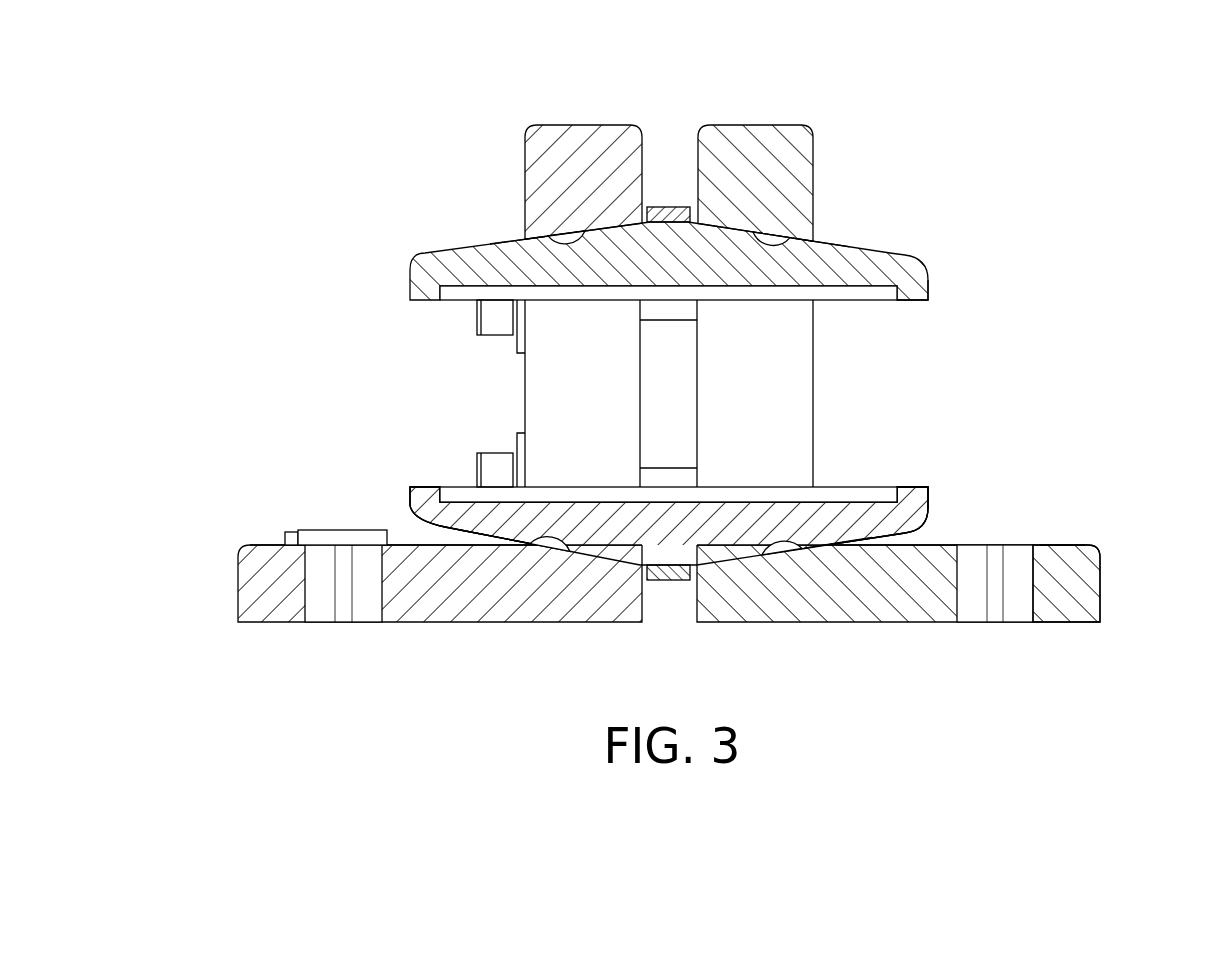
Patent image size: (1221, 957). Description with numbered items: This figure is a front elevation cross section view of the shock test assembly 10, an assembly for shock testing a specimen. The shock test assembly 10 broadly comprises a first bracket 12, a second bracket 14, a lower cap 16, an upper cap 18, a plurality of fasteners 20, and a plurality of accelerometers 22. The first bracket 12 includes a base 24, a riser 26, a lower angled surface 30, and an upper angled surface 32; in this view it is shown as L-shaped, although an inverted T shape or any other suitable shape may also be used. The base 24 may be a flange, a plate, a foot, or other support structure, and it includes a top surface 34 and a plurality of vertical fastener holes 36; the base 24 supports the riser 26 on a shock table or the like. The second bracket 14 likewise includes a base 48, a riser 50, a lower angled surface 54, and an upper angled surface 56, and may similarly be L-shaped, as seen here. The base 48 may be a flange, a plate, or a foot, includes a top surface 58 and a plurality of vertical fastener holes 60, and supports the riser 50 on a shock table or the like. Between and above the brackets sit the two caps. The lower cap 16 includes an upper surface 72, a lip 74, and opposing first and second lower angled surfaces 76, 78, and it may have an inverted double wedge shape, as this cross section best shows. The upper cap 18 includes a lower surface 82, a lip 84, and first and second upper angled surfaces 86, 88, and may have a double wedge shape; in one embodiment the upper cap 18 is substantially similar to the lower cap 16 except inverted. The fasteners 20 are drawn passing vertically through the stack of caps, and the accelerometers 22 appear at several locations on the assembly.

The shock test assembly 10 is at (669, 376).
The first bracket 12 is at (289, 508).
The second bracket 14 is at (1080, 573).
The lower cap 16 is at (707, 561).
The upper cap 18 is at (697, 257).
The fasteners 20 is at (490, 323).
The accelerometers 22 is at (672, 205).
The base 24 is at (618, 573).
The riser 26 is at (565, 120).
The lower angled surface 30 is at (545, 543).
The upper angled surface 32 is at (552, 244).
The top surface 34 is at (273, 542).
The vertical fastener holes 36 is at (327, 617).
The base 48 is at (1102, 567).
The riser 50 is at (773, 120).
The lower angled surface 54 is at (795, 545).
The upper angled surface 56 is at (788, 244).
The top surface 58 is at (1063, 545).
The vertical fastener holes 60 is at (1010, 617).
The upper surface 72 is at (858, 500).
The lip 74 is at (913, 487).
The first lower angled surface 76 is at (492, 543).
The second lower angled surface 78 is at (848, 546).
The lower surface 82 is at (858, 300).
The lip 84 is at (913, 306).
The first upper angled surface 86 is at (528, 244).
The second upper angled surface 88 is at (812, 245).